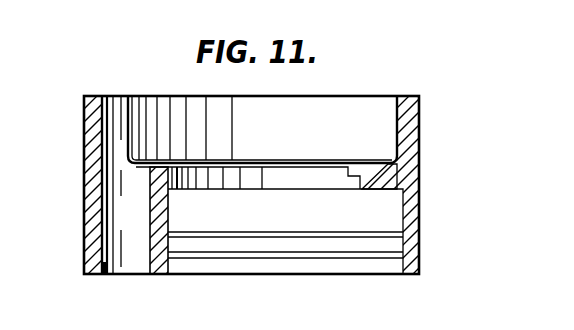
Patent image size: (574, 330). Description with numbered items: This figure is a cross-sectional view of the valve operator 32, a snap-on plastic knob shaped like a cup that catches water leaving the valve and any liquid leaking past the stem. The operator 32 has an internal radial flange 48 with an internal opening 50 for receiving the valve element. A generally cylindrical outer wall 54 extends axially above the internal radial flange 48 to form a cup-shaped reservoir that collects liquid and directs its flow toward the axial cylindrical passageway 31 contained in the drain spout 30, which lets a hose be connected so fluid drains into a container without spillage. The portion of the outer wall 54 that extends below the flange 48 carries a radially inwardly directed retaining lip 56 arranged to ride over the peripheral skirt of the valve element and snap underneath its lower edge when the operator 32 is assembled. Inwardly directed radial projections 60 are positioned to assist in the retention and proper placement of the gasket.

The drain spout 30 is at (108, 273).
The axial cylindrical passageway 31 is at (133, 223).
The valve operator 32 is at (427, 188).
The internal radial flange 48 is at (384, 167).
The internal opening 50 is at (245, 172).
The cylindrical outer wall 54 is at (421, 141).
The retaining lip 56 is at (408, 272).
The radial projections 60 is at (351, 173).